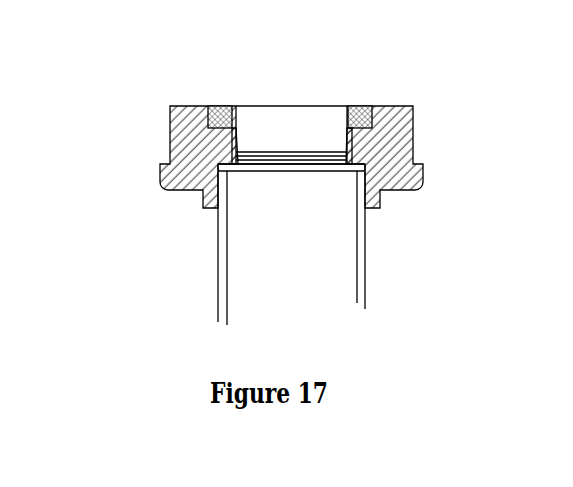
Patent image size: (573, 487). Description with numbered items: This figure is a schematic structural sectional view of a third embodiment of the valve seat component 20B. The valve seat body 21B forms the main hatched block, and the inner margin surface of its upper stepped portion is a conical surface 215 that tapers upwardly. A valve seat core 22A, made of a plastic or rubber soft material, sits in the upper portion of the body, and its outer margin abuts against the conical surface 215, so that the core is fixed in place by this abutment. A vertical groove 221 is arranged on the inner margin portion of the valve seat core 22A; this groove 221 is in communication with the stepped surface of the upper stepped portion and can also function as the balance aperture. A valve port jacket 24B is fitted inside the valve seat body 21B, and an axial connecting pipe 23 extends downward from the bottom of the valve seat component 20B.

The valve seat component 20B is at (264, 112).
The valve seat body 21B is at (188, 116).
The groove 221 is at (225, 110).
The valve port jacket 24B is at (339, 101).
The valve seat core 22A is at (365, 98).
The conical surface 215 is at (389, 113).
The axial connecting pipe 23 is at (211, 261).